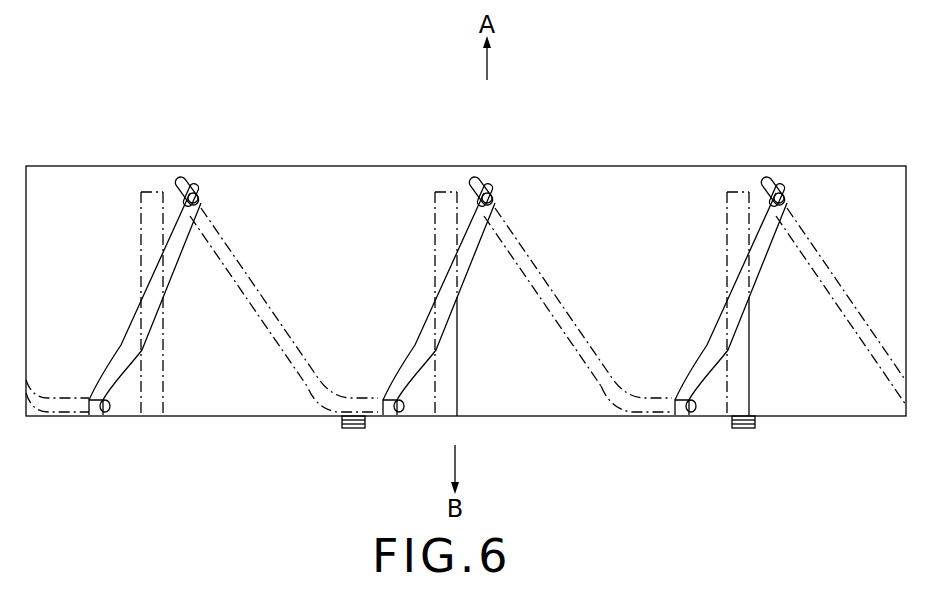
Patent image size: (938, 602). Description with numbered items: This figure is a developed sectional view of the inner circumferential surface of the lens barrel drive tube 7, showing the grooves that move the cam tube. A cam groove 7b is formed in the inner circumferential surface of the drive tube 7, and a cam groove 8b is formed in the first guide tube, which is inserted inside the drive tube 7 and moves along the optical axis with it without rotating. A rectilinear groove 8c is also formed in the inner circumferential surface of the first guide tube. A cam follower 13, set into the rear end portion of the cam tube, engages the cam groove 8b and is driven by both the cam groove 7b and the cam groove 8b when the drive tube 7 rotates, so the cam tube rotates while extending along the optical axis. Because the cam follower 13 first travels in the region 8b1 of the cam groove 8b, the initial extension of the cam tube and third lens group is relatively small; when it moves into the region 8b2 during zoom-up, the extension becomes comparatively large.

The drive tube 7 is at (573, 178).
The cam groove 7b is at (472, 258).
The cam follower 13 is at (490, 180).
The cam groove 8b is at (674, 341).
The region of cam groove 8b2 is at (572, 345).
The region of cam groove 8b1 is at (637, 418).
The rectilinear groove 8c is at (433, 222).